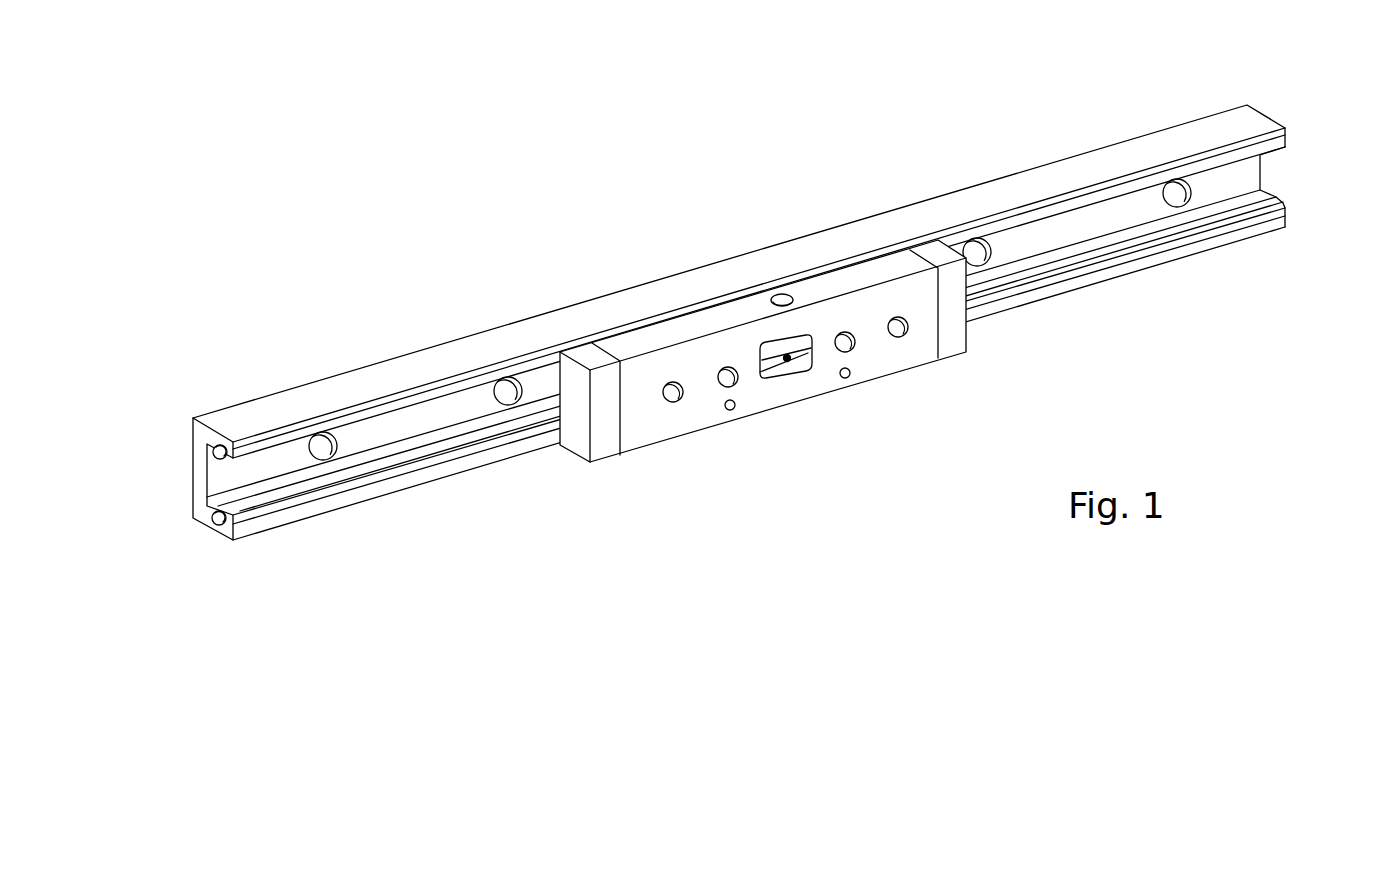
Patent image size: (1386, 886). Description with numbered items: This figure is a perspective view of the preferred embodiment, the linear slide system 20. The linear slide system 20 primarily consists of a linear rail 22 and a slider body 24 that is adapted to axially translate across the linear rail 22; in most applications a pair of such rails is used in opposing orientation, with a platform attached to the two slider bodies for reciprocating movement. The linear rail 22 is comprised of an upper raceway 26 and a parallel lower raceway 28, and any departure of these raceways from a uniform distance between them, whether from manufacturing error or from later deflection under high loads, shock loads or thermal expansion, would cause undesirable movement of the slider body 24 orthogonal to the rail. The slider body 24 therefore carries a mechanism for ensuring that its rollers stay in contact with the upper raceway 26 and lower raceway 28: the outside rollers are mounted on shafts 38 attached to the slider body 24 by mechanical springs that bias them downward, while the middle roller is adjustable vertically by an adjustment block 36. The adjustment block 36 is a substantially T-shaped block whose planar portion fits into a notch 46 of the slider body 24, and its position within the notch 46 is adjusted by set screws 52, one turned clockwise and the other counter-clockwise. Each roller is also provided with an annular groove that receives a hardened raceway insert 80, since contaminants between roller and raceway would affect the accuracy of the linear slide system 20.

The linear slide system 20 is at (722, 328).
The linear rail 22 is at (722, 358).
The slider body 24 is at (780, 324).
The upper raceway 26 is at (1272, 150).
The lower raceway 28 is at (1284, 209).
The adjustment block 36 is at (772, 362).
The shaft 38 is at (680, 400).
The notch 46 is at (812, 336).
The set screw 52 is at (785, 294).
The hardened raceway insert 80 is at (213, 452).